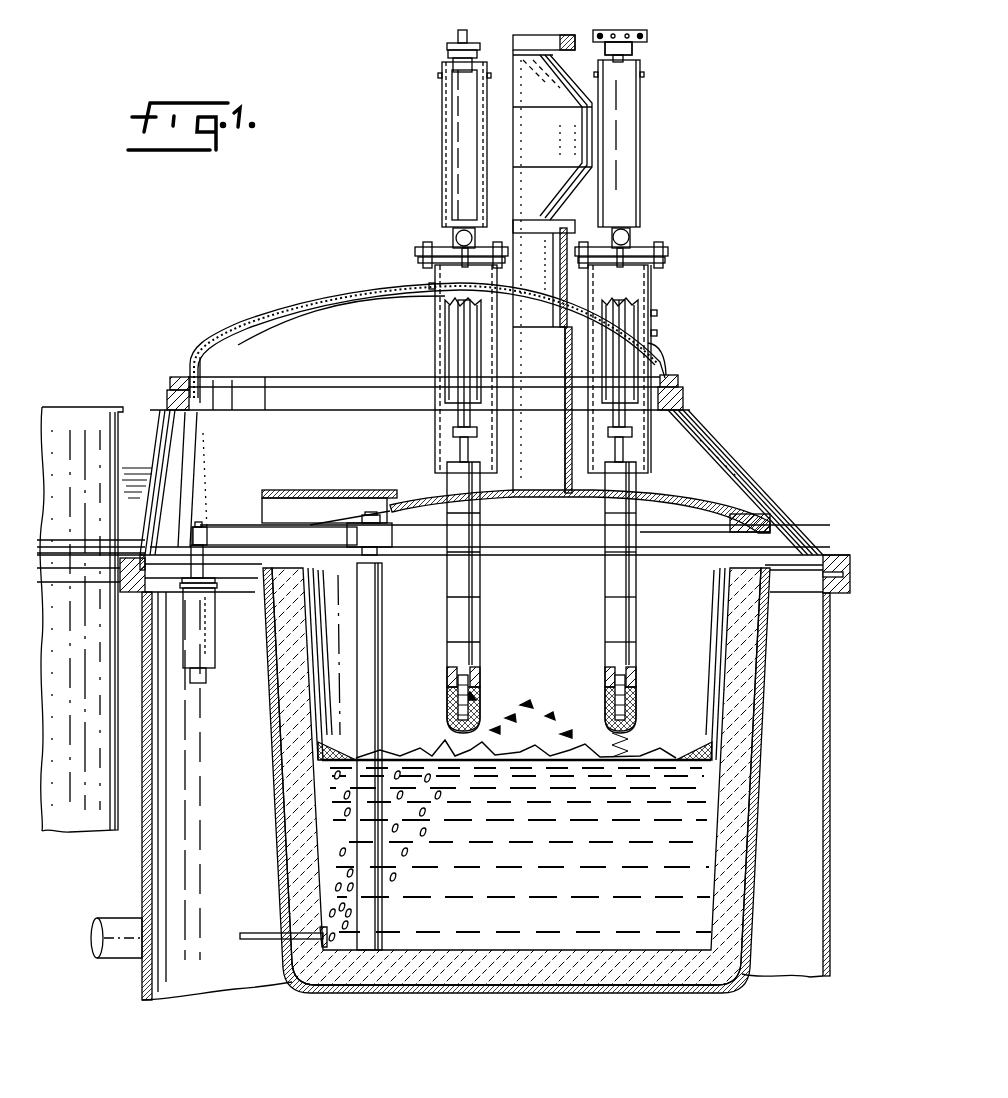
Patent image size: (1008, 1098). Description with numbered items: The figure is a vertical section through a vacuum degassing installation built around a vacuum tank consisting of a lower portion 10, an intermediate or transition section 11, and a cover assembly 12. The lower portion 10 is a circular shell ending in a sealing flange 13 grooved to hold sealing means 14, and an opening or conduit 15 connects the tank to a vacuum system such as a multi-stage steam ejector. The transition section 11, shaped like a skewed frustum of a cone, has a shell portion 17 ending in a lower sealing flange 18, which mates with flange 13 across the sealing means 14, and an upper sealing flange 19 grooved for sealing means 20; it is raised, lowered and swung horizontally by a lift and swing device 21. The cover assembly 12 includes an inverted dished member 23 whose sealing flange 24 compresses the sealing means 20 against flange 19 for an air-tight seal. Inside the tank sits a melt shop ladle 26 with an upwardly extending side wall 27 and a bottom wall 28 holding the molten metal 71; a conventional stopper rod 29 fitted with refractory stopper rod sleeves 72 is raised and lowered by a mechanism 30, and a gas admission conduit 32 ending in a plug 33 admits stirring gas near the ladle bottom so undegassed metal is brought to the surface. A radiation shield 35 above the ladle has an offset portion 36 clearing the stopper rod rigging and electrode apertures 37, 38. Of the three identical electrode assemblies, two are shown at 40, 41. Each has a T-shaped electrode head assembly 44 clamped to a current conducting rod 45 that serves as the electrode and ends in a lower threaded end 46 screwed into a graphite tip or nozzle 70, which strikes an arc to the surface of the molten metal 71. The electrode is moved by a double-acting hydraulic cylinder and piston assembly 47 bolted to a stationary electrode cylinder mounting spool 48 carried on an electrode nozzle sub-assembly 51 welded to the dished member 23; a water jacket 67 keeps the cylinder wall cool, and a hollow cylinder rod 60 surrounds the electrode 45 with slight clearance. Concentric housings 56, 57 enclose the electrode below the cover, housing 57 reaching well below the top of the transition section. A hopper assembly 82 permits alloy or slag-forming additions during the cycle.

The lower portion 10 is at (832, 938).
The intermediate or transition section 11 is at (728, 440).
The cover assembly 12 is at (250, 318).
The sealing flange 13 is at (833, 595).
The sealing means 14 is at (826, 578).
The opening or conduit 15 is at (112, 962).
The shell portion 17 is at (752, 478).
The lower sealing flange 18 is at (840, 555).
The upper sealing flange 19 is at (684, 404).
The sealing means 20 is at (676, 380).
The lift and swing device 21 is at (74, 400).
The inverted dished member 23 is at (316, 296).
The sealing flange 24 is at (672, 375).
The melt shop ladle 26 is at (752, 897).
The side wall 27 is at (752, 820).
The bottom wall 28 is at (521, 995).
The stopper rod 29 is at (382, 677).
The mechanism 30 is at (214, 656).
The gas admission conduit 32 is at (272, 933).
The plug 33 is at (310, 990).
The radiation shield 35 is at (712, 512).
The offset portion 36 is at (288, 488).
The electrode aperture 37 is at (445, 490).
The electrode aperture 38 is at (637, 495).
The electrode assembly 40 is at (440, 200).
The electrode assembly 41 is at (655, 218).
The electrode head assembly 44 is at (648, 48).
The current conducting rod 45 is at (455, 40).
The lower threaded end 46 is at (626, 695).
The double-acting hydraulic cylinder and piston assembly 47 is at (453, 106).
The electrode cylinder mounting spool 48 is at (457, 238).
The electrode nozzle sub-assembly 51 is at (657, 300).
The housing 56 is at (428, 275).
The housing 57 is at (440, 323).
The cylinder rod 60 is at (455, 357).
The water jacket 67 is at (443, 140).
The graphite tip or nozzle 70 is at (633, 722).
The molten metal 71 is at (695, 856).
The refractory stopper rod sleeves 72 is at (630, 657).
The hopper assembly 82 is at (544, 30).